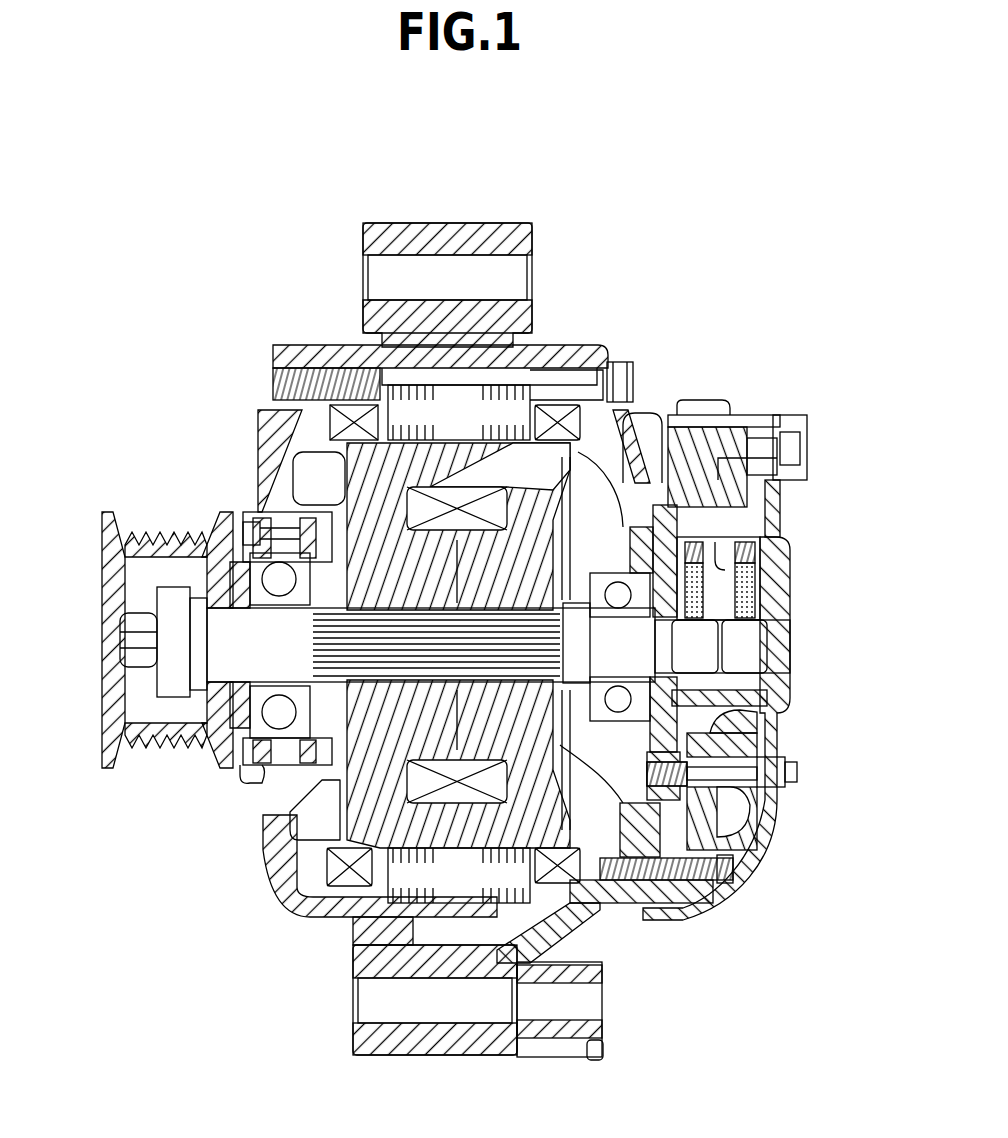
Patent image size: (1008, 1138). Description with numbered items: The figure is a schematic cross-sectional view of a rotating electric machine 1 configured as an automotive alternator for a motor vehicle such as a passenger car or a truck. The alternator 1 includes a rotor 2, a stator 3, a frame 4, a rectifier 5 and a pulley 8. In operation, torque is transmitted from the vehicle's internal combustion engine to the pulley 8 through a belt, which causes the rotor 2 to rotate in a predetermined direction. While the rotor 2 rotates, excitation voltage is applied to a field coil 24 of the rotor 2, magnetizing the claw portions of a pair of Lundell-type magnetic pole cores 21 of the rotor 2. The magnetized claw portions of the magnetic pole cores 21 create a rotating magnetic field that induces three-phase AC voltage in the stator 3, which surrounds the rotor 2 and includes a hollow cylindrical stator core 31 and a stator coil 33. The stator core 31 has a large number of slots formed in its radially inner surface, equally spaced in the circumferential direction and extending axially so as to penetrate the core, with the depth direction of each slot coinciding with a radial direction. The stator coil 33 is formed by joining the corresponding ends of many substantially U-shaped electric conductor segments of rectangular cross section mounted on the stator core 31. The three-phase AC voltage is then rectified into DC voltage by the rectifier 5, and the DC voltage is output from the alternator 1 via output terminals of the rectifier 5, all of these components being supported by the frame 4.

The rotating electric machine 1 is at (645, 166).
The rotor 2 is at (322, 442).
The stator 3 is at (503, 410).
The frame 4 is at (270, 473).
The rectifier 5 is at (773, 837).
The pulley 8 is at (108, 742).
The magnetic pole cores 21 is at (382, 810).
The field coil 24 is at (453, 790).
The stator core 31 is at (457, 417).
The stator coil 33 is at (353, 410).